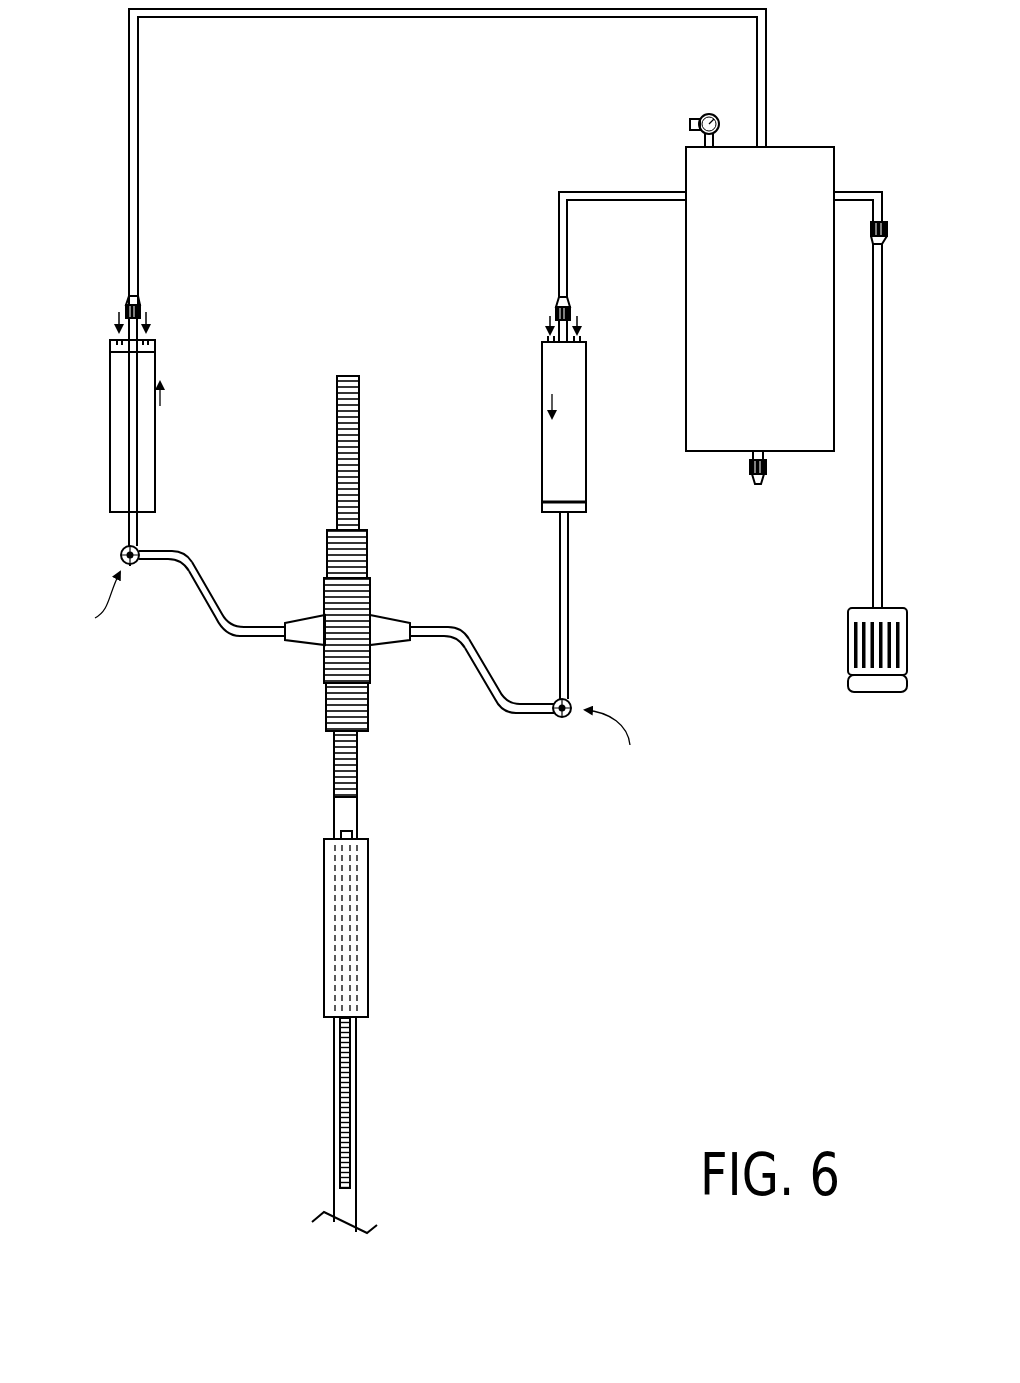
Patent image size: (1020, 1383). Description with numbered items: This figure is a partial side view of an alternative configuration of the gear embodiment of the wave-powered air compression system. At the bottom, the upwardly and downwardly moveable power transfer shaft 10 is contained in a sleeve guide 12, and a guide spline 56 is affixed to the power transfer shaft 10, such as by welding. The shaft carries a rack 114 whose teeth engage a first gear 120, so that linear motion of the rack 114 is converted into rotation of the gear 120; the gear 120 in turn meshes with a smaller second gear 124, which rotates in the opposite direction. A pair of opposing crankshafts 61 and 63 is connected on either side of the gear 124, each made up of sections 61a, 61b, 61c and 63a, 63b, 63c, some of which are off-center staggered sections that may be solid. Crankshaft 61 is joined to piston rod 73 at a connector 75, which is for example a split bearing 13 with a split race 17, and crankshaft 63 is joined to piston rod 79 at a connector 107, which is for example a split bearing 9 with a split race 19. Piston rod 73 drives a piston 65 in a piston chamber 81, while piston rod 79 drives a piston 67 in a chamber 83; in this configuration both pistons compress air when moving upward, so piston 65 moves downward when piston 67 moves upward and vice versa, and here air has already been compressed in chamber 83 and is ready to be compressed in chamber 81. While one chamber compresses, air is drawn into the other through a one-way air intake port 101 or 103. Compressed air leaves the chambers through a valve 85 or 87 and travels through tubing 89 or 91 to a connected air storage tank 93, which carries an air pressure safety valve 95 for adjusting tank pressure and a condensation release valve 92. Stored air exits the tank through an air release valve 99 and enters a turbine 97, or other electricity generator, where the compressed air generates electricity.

The split bearing 9 is at (121, 554).
The power transfer shaft 10 is at (349, 1125).
The sleeve guide 12 is at (323, 916).
The split bearing 13 is at (568, 716).
The split race 17 is at (572, 704).
The split race 19 is at (134, 565).
The guide spline 56 is at (350, 1058).
The crankshaft 61 is at (485, 690).
The crankshaft section 61a is at (430, 624).
The crankshaft section 61b is at (484, 650).
The crankshaft section 61c is at (528, 702).
The crankshaft 63 is at (219, 568).
The crankshaft section 63a is at (264, 624).
The crankshaft section 63b is at (214, 590).
The crankshaft section 63c is at (160, 560).
The piston 65 is at (540, 504).
The piston 67 is at (108, 352).
The piston rod 73 is at (569, 572).
The connector 75 is at (618, 746).
The piston rod 79 is at (127, 533).
The piston chamber 81 is at (559, 424).
The piston chamber 83 is at (130, 426).
The valve 85 is at (148, 302).
The valve 87 is at (572, 304).
The tubing 89 is at (140, 206).
The tubing 91 is at (586, 190).
The condensation release valve 92 is at (768, 468).
The air storage tank 93 is at (816, 146).
The air pressure safety valve 95 is at (698, 116).
The turbine 97 is at (846, 648).
The air release valve 99 is at (890, 230).
The one-way air intake port 101 is at (546, 338).
The one-way air intake port 103 is at (114, 338).
The connector 107 is at (95, 625).
The rack 114 is at (367, 577).
The first gear 120 is at (382, 552).
The second gear 124 is at (384, 660).